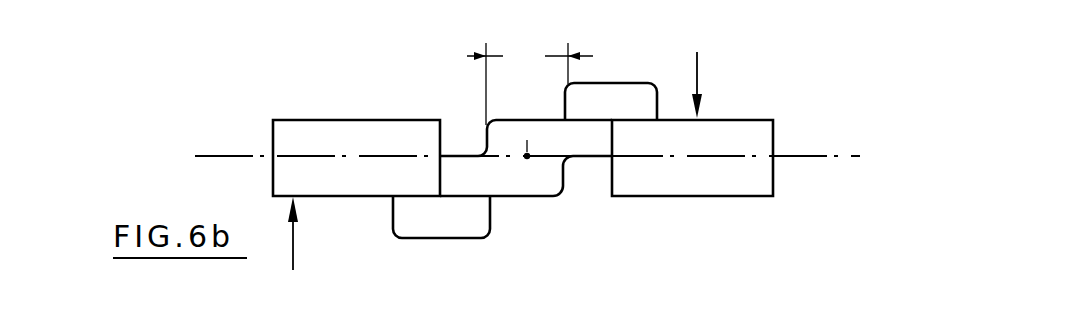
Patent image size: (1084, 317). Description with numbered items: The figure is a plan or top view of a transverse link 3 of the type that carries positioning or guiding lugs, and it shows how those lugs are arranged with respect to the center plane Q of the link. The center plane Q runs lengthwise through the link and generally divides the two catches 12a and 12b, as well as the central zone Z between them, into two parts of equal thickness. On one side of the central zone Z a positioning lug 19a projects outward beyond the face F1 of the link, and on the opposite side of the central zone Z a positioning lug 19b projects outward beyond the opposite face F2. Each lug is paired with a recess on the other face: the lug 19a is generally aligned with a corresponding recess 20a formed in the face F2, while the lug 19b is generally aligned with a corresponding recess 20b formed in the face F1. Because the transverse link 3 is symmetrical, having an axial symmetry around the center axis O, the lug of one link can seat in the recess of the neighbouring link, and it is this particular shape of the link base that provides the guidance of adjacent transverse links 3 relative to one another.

The catch 12a is at (325, 130).
The catch 12b is at (738, 135).
The positioning lug 19a is at (435, 223).
The positioning lug 19b is at (615, 95).
The recess 20a is at (463, 145).
The recess 20b is at (590, 177).
The transverse link 3 is at (775, 144).
The center axis O is at (528, 160).
The central zone Z is at (530, 81).
The face F1 is at (307, 238).
The face F2 is at (712, 78).
The center plane Q is at (530, 143).